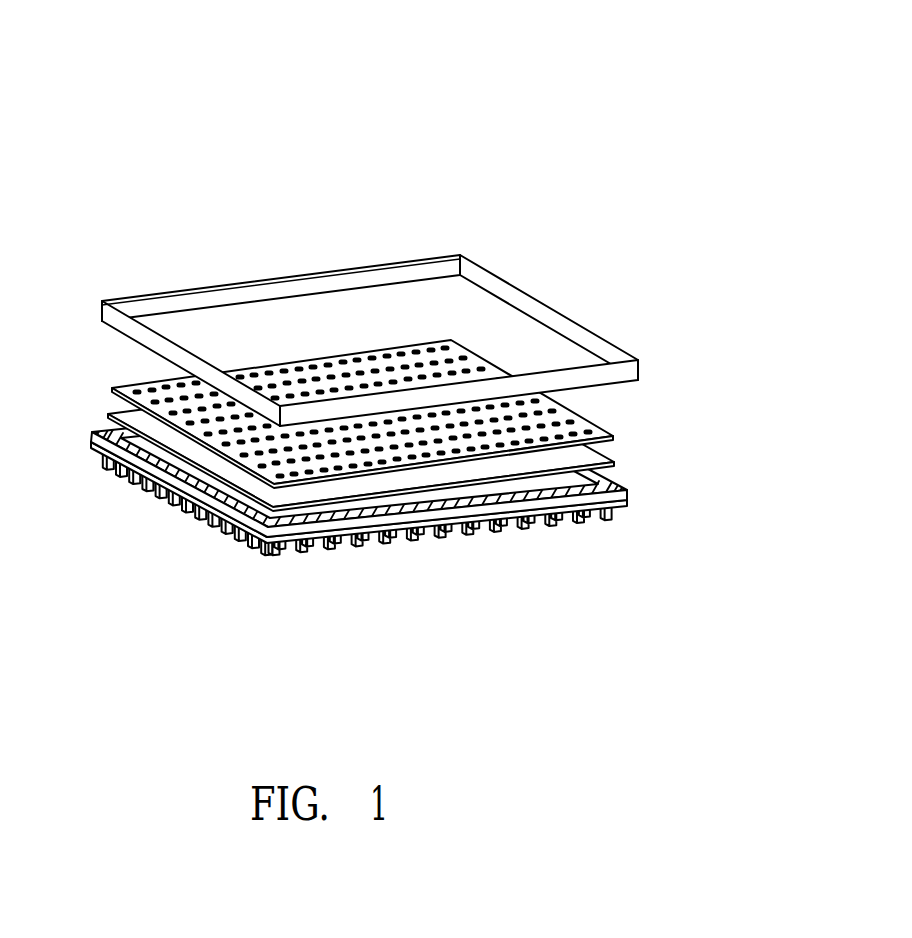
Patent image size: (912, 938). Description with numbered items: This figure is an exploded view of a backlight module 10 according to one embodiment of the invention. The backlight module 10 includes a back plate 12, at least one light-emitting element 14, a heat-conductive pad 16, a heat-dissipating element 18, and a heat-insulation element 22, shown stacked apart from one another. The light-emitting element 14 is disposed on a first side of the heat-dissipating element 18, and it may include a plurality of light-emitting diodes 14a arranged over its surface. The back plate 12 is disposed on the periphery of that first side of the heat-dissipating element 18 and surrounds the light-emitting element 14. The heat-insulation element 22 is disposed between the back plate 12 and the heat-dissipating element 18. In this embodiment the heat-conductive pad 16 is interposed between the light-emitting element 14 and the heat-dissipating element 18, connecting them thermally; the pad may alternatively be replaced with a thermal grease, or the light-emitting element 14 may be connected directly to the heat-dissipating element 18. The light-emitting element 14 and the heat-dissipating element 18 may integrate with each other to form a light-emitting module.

The backlight module 10 is at (57, 46).
The back plate 12 is at (498, 273).
The light-emitting element 14 is at (600, 416).
The light-emitting diodes 14a is at (150, 385).
The heat-conductive pad 16 is at (604, 459).
The heat-insulation element 22 is at (103, 431).
The heat-dissipating element 18 is at (90, 441).